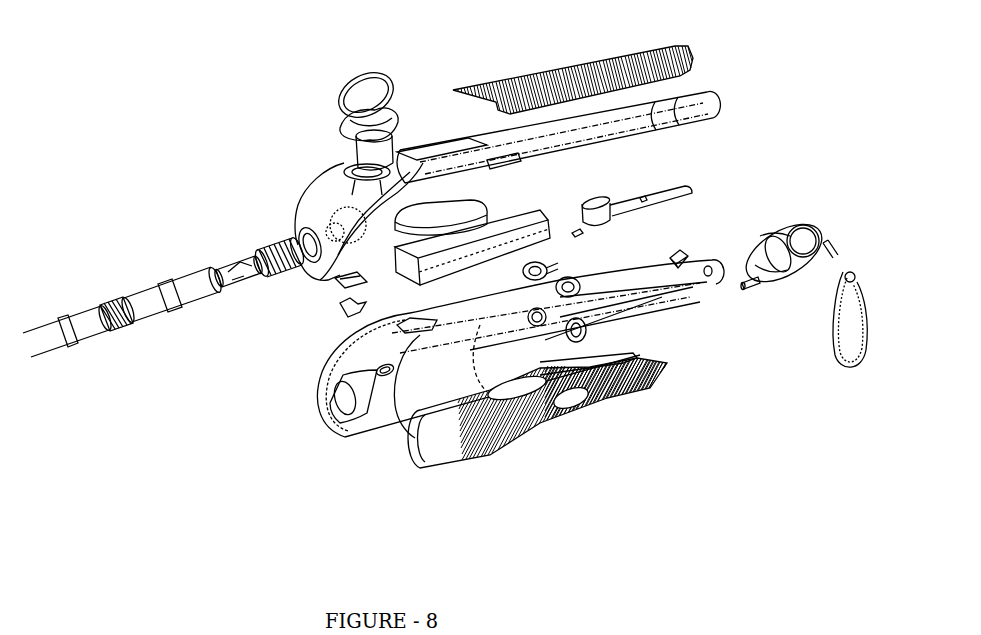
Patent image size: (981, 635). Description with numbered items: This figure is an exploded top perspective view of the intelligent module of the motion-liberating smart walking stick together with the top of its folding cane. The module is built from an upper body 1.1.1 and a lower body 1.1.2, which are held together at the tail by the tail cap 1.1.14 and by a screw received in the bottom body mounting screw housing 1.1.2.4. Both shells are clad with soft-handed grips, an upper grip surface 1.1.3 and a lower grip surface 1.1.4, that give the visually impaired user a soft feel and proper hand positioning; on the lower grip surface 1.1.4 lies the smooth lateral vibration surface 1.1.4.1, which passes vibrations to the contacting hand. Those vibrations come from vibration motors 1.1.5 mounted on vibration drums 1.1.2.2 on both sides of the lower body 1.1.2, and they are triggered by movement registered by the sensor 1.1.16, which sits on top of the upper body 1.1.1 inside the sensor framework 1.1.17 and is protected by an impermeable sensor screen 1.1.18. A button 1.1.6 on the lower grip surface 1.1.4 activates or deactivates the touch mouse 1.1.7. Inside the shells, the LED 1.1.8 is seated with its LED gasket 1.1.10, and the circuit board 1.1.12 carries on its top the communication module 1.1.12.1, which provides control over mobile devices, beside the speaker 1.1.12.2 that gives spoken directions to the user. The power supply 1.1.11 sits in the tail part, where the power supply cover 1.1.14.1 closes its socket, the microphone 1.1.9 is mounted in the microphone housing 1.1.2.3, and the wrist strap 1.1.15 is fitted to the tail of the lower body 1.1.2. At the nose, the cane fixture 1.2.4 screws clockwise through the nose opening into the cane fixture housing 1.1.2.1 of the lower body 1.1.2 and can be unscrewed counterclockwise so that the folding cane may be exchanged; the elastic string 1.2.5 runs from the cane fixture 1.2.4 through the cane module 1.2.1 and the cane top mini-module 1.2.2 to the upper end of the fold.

The upper body 1.1.1 is at (718, 113).
The lower body 1.1.2 is at (430, 398).
The cane fixture housing 1.1.2.1 is at (350, 412).
The vibration drums 1.1.2.2 is at (653, 387).
The microphone housing 1.1.2.3 is at (710, 277).
The bottom body mounting screw housing 1.1.2.4 is at (387, 372).
The upper grip surface 1.1.3 is at (533, 63).
The lower grip surface 1.1.4 is at (547, 437).
The lateral vibration surface 1.1.4.1 is at (580, 403).
The vibration motors 1.1.5 is at (557, 293).
The button 1.1.6 is at (412, 320).
The touch mouse 1.1.7 is at (450, 213).
The LED 1.1.8 is at (343, 198).
The microphone 1.1.9 is at (682, 253).
The LED gasket 1.1.10 is at (328, 288).
The power supply 1.1.11 is at (520, 212).
The circuit board 1.1.12 is at (679, 208).
The communication module 1.1.12.1 is at (577, 233).
The speaker 1.1.12.2 is at (597, 198).
The tail cap 1.1.14 is at (823, 295).
The power supply cover 1.1.14.1 is at (747, 283).
The wrist strap 1.1.15 is at (848, 367).
The sensor 1.1.16 is at (360, 158).
The sensor framework 1.1.17 is at (355, 80).
The sensor screen 1.1.18 is at (348, 118).
The cane module 1.2.1 is at (48, 347).
The cane top mini-module 1.2.2 is at (150, 313).
The cane fixture 1.2.4 is at (263, 253).
The elastic string 1.2.5 is at (220, 270).